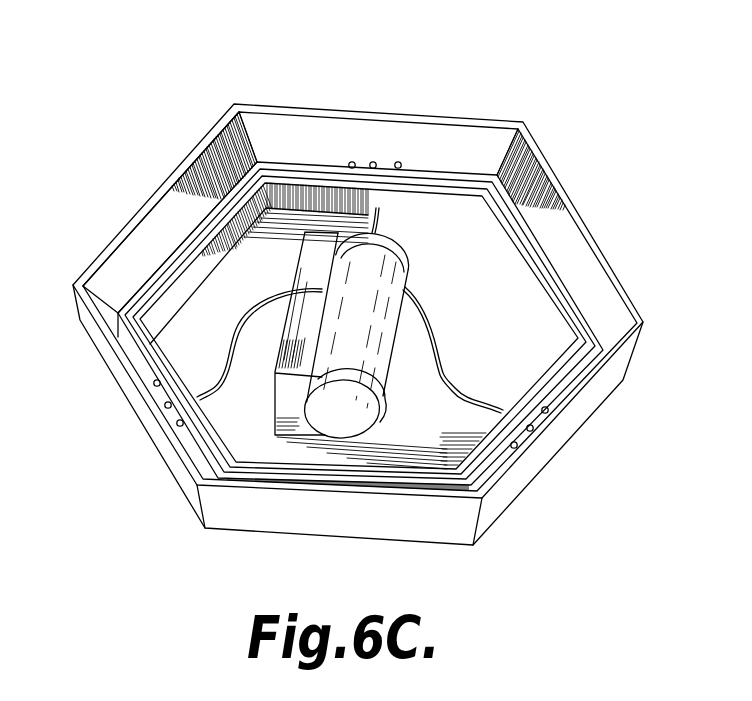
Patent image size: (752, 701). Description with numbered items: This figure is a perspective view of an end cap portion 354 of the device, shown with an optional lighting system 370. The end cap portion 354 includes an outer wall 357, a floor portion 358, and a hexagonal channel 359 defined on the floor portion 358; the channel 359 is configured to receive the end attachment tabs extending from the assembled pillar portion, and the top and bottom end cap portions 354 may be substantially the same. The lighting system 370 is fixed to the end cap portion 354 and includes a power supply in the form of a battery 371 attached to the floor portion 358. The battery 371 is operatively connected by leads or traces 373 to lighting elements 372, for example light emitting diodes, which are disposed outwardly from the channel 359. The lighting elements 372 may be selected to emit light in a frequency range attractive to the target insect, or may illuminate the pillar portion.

The end cap portion 354 is at (474, 86).
The outer wall 357 is at (568, 198).
The floor portion 358 is at (477, 363).
The hexagonal channel 359 is at (167, 272).
The lighting system 370 is at (428, 263).
The battery 371 is at (383, 372).
The lighting elements 372 is at (352, 162).
The leads or traces 373 is at (238, 331).